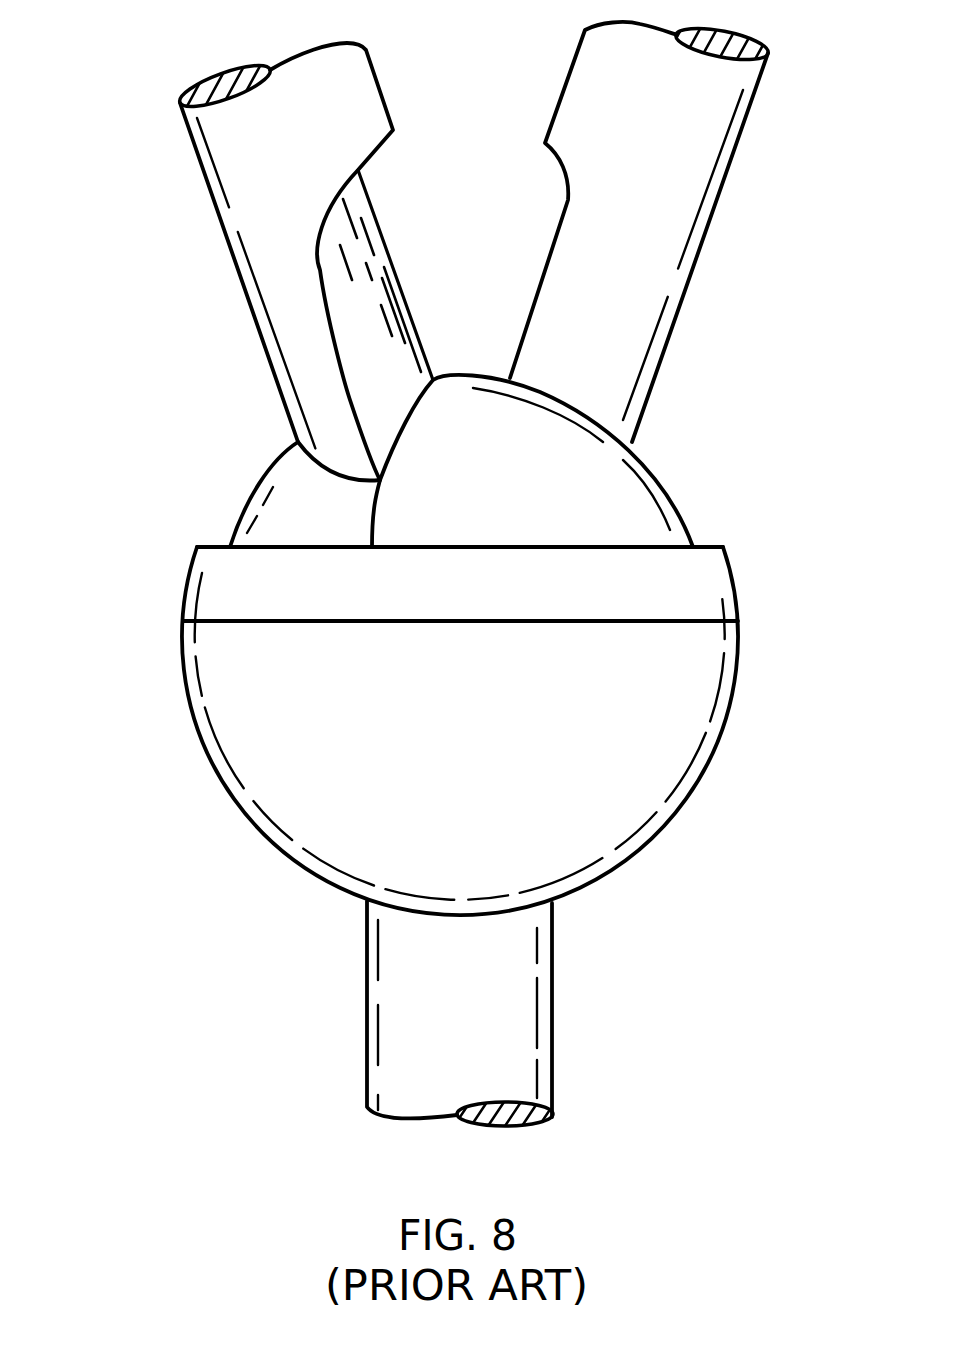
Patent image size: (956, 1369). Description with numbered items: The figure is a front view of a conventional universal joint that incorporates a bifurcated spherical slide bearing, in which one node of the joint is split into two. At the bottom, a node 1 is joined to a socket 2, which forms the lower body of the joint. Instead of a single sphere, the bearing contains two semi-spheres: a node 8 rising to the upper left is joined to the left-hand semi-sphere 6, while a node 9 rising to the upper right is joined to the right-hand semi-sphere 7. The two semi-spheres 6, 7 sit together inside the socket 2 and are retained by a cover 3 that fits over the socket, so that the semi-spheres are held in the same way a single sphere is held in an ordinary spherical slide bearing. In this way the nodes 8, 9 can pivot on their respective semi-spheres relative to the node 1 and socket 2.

The node 1 is at (533, 963).
The socket 2 is at (673, 685).
The cover 3 is at (203, 602).
The left-hand semi-sphere 6 is at (257, 510).
The right-hand semi-sphere 7 is at (653, 508).
The node 8 is at (230, 162).
The node 9 is at (660, 233).